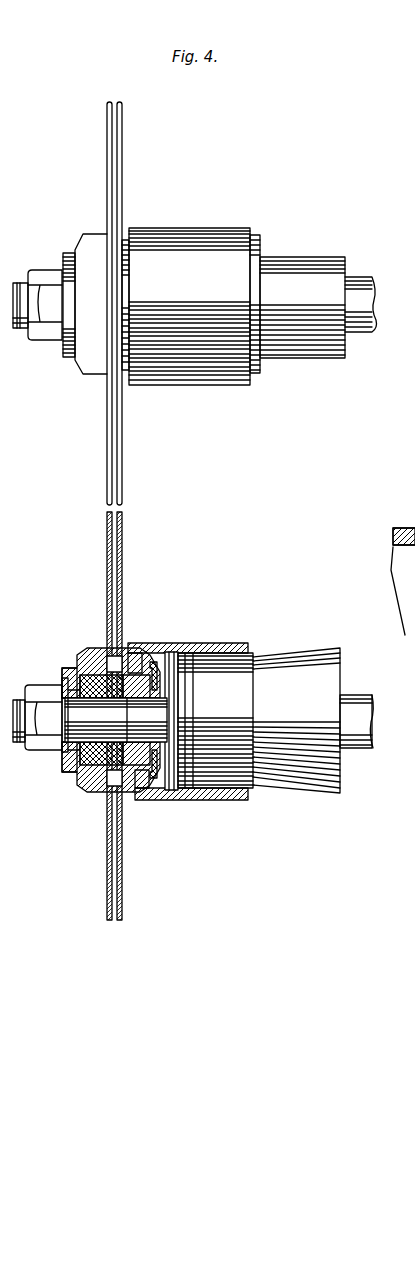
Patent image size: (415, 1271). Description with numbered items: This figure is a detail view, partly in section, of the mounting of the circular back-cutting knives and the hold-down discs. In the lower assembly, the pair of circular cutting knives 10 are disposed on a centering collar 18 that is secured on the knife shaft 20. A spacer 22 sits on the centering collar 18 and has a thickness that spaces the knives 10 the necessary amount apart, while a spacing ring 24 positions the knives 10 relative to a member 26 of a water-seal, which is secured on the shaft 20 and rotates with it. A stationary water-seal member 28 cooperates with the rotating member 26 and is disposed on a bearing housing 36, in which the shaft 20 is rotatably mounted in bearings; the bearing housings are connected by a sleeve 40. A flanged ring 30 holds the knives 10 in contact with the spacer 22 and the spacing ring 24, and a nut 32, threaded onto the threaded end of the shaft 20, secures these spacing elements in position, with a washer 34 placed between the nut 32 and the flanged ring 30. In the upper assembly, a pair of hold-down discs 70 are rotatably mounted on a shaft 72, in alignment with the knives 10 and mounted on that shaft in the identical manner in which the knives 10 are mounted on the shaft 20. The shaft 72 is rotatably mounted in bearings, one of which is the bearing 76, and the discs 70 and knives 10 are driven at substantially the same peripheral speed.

The circular cutting knives 10 is at (111, 560).
The centering collar 18 is at (95, 790).
The knife shaft 20 is at (78, 710).
The spacer 22 is at (108, 650).
The spacing ring 24 is at (120, 652).
The water-seal member 26 is at (147, 662).
The stationary water-seal member 28 is at (227, 643).
The flanged ring 30 is at (66, 668).
The nut 32 is at (40, 752).
The washer 34 is at (62, 748).
The bearing housing 36 is at (227, 782).
The sleeve 40 is at (305, 656).
The hold-down discs 70 is at (111, 166).
The shaft 72 is at (18, 330).
The bearing 76 is at (257, 375).